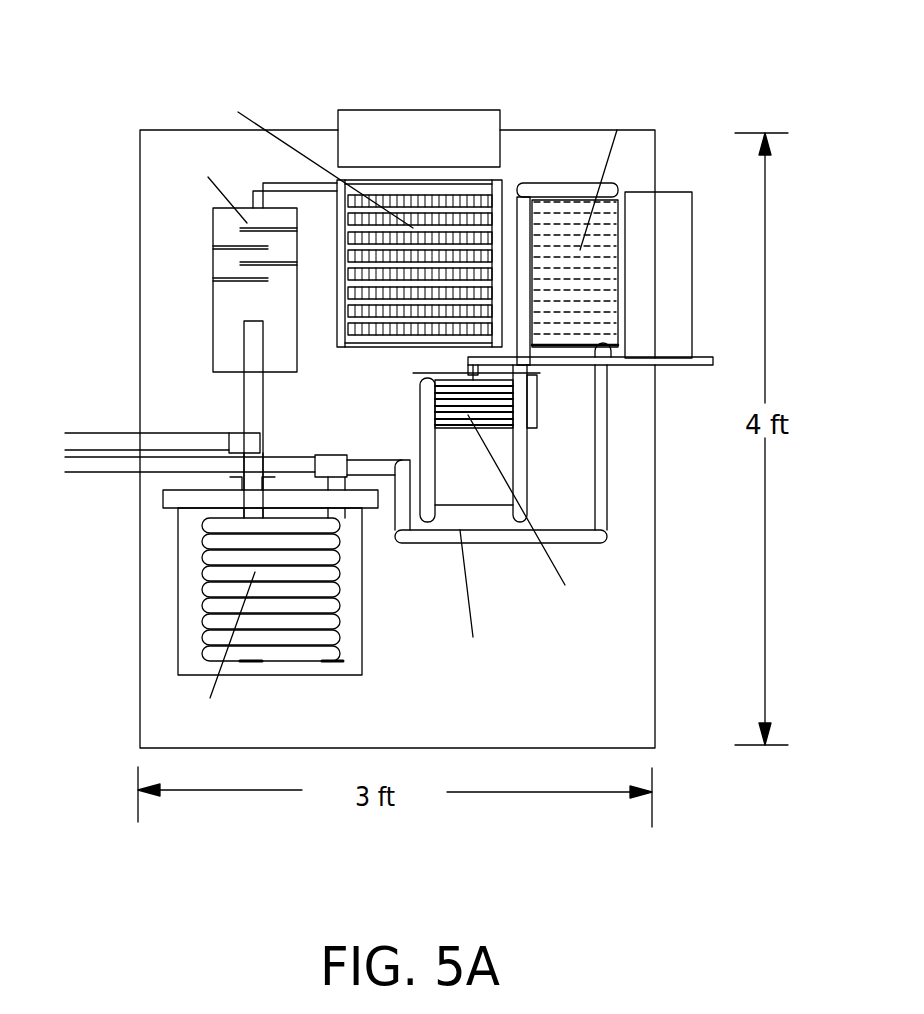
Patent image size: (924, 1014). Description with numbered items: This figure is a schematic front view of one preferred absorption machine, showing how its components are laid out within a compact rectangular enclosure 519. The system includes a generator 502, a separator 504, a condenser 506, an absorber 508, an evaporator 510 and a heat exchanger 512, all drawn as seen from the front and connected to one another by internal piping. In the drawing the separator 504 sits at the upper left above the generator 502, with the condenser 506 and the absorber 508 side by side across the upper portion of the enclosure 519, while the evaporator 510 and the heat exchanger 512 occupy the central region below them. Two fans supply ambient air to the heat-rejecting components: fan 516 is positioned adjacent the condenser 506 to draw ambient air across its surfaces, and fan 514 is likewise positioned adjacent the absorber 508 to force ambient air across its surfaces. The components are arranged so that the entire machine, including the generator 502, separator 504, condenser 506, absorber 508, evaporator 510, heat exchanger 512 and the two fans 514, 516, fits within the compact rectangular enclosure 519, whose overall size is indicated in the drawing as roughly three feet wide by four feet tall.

The generator 502 is at (185, 545).
The separator 504 is at (213, 221).
The condenser 506 is at (483, 197).
The absorber 508 is at (608, 205).
The evaporator 510 is at (490, 413).
The heat exchanger 512 is at (487, 532).
The fan 514 is at (680, 228).
The fan 516 is at (363, 118).
The compact rectangular enclosure 519 is at (135, 712).